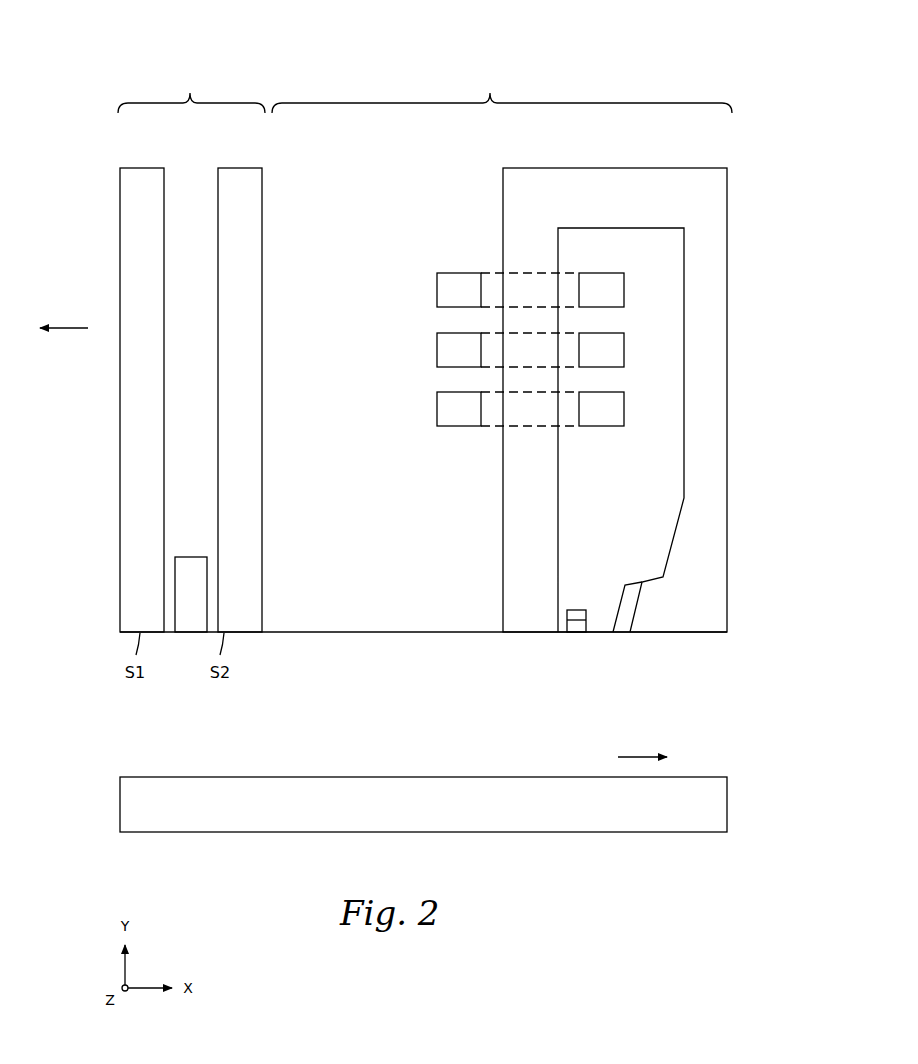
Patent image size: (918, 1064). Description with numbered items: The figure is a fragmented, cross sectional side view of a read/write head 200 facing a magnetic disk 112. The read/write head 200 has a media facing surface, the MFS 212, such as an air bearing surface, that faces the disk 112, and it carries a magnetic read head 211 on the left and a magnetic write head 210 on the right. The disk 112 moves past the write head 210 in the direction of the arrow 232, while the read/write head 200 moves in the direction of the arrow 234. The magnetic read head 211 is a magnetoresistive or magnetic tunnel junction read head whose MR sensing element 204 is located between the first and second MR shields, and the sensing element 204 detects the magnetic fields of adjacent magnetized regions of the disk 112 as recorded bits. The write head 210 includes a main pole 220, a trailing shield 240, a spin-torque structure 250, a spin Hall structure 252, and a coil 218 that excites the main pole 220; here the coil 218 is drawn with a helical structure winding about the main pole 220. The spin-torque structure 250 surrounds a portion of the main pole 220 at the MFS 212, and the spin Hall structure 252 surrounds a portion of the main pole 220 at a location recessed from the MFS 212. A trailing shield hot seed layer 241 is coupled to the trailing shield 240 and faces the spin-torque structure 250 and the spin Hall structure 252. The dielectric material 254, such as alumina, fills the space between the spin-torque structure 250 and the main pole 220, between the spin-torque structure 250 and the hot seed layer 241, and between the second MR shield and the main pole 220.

The read/write head 200 is at (120, 26).
The magnetic read head 211 is at (191, 93).
The magnetic write head 210 is at (502, 93).
The arrow 234 is at (72, 328).
The MR sensing element 204 is at (185, 633).
The trailing shield 240 is at (718, 571).
The MFS 212 is at (718, 633).
The main pole 220 is at (550, 463).
The trailing shield hot seed layer 241 is at (625, 625).
The coil 218 is at (458, 427).
The spin-torque structure 250 is at (575, 625).
The spin Hall structure 252 is at (577, 608).
The dielectric material 254 is at (460, 625).
The arrow 232 is at (632, 755).
The magnetic disk 112 is at (718, 804).